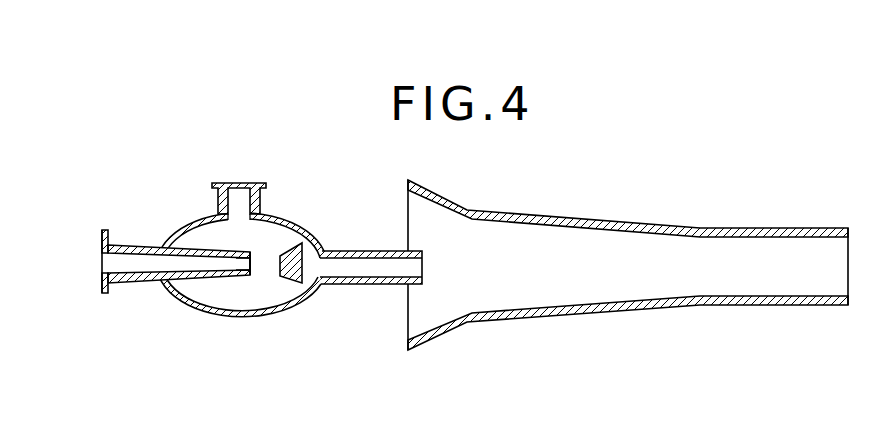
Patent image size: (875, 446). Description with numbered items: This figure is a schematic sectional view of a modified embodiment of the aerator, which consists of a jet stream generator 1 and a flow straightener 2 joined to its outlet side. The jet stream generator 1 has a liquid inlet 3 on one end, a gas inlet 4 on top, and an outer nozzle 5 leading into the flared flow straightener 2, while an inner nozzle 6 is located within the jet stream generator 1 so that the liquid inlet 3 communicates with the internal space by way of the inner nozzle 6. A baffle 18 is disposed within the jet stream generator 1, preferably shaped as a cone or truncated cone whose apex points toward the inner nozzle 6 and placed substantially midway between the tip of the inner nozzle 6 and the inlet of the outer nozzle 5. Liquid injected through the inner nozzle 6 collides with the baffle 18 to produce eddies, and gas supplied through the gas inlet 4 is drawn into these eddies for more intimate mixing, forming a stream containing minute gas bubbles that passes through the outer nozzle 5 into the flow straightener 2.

The jet stream generator 1 is at (258, 320).
The flow straightener 2 is at (657, 307).
The liquid inlet 3 is at (115, 257).
The gas inlet 4 is at (240, 193).
The outer nozzle 5 is at (405, 268).
The inner nozzle 6 is at (240, 266).
The baffle 18 is at (293, 306).